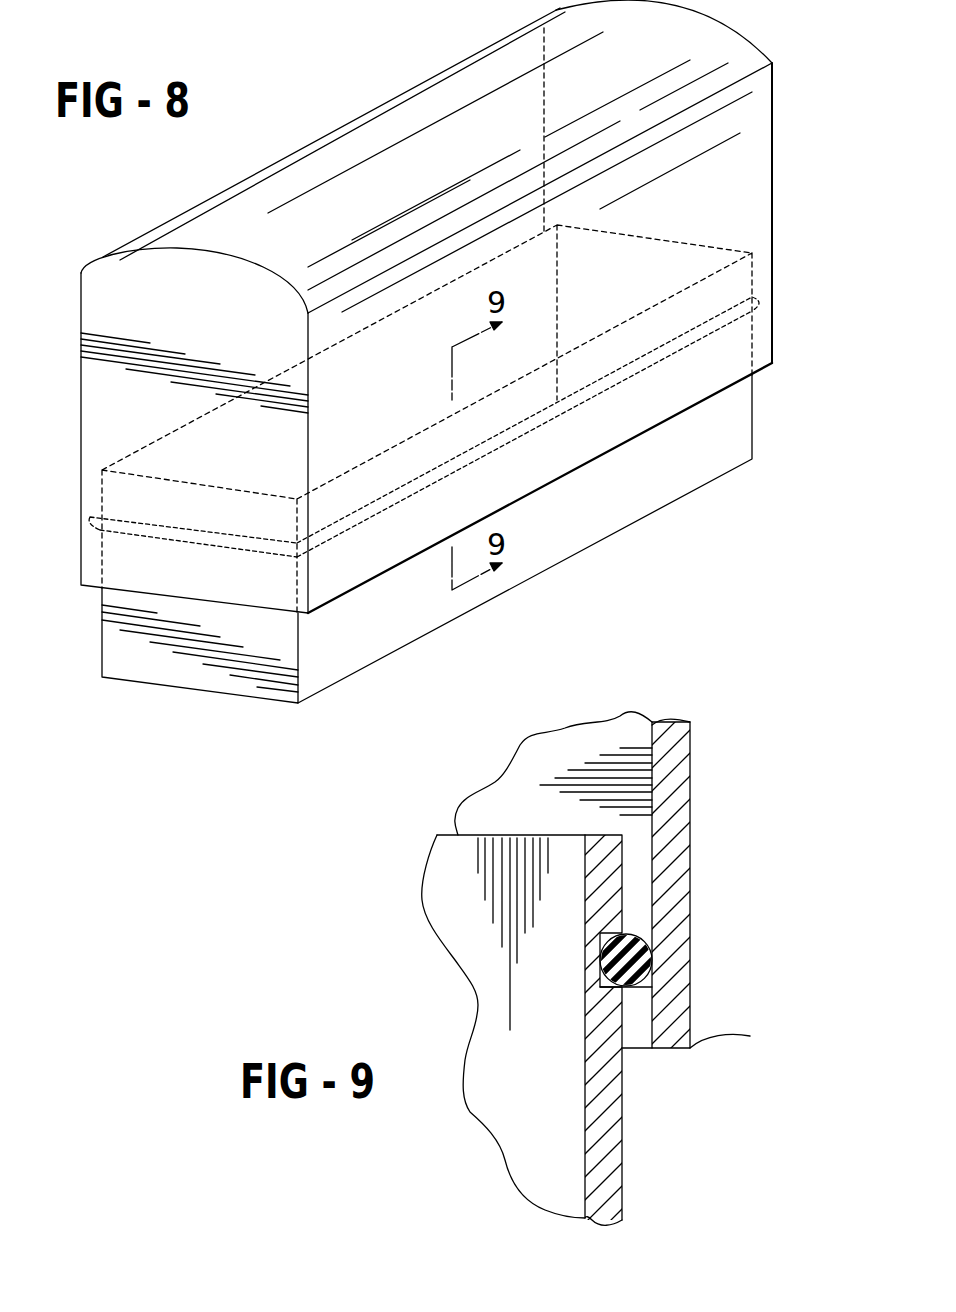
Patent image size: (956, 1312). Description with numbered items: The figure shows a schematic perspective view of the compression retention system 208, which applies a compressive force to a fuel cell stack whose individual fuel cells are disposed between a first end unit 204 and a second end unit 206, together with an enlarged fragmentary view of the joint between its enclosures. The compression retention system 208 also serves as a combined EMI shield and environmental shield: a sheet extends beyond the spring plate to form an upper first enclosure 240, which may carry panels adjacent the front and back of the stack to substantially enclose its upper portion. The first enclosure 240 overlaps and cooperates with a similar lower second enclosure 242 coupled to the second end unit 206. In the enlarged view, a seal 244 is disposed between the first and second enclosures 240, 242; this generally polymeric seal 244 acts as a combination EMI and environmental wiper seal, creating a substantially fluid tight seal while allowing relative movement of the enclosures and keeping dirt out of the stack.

In FIG. 8, the first end unit 204 is at (297, 181).
In FIG. 8, the second end unit 206 is at (238, 700).
In FIG. 8, the compression retention system 208 is at (802, 248).
In FIG. 8, the first enclosure 240 is at (697, 217).
In FIG. 9, the first enclosure 240 is at (690, 833).
In FIG. 8, the second enclosure 242 is at (727, 423).
In FIG. 9, the second enclosure 242 is at (622, 1140).
In FIG. 8, the seal 244 is at (350, 518).
In FIG. 9, the seal 244 is at (655, 982).